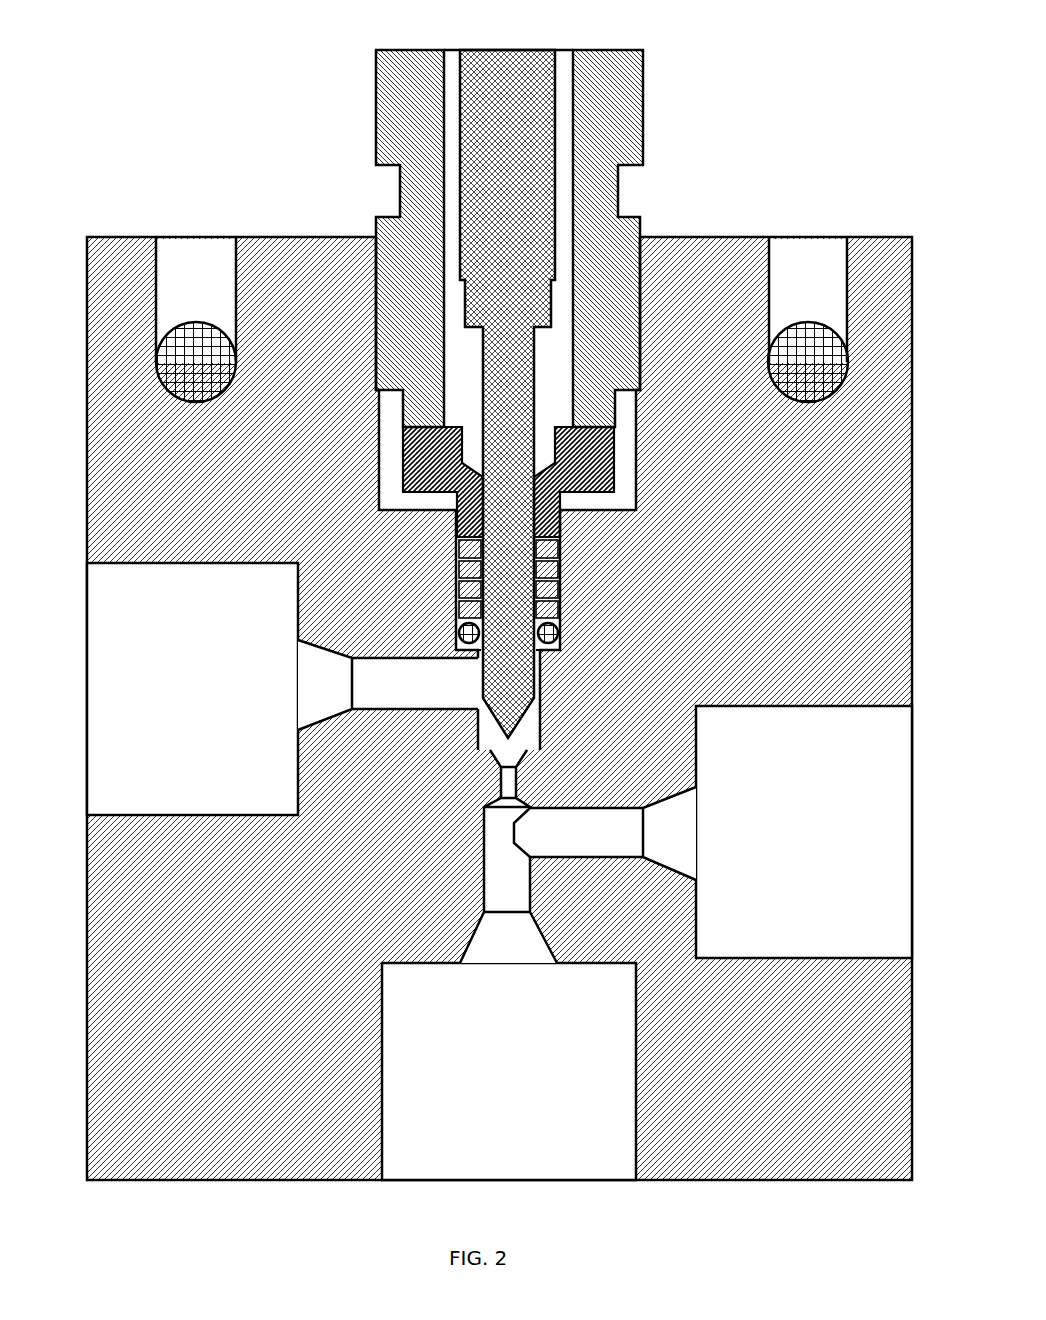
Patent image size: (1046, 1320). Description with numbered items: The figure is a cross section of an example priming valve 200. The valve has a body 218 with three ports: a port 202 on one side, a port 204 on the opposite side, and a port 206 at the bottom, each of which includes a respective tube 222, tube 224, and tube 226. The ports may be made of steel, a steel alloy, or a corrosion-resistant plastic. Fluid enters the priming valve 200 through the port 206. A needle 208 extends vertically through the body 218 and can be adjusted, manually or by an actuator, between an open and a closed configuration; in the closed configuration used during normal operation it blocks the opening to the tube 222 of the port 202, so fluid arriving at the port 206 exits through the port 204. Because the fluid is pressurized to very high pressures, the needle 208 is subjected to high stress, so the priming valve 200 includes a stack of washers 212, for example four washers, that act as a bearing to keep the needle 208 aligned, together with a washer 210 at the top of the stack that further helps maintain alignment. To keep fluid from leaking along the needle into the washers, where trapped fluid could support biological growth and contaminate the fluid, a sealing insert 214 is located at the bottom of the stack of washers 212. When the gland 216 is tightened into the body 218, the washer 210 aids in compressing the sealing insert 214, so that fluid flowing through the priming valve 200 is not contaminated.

The priming valve 200 is at (503, 623).
The port 202 is at (117, 675).
The port 204 is at (893, 802).
The port 206 is at (460, 1162).
The needle 208 is at (495, 48).
The washer 210 is at (404, 468).
The stack of washers 212 is at (585, 542).
The sealing insert 214 is at (558, 645).
The gland 216 is at (375, 130).
The body 218 is at (272, 237).
The tube 222 is at (405, 658).
The tube 224 is at (578, 808).
The tube 226 is at (505, 867).